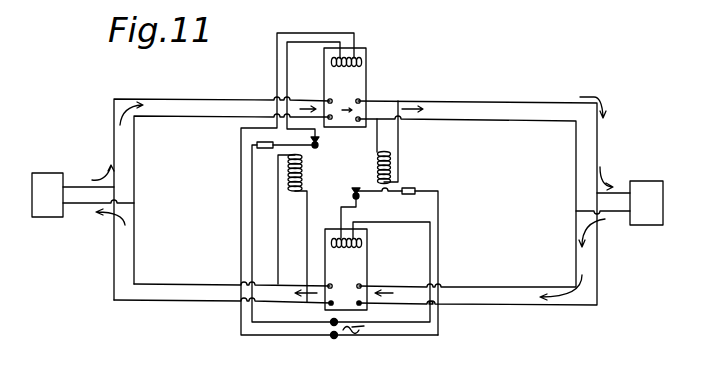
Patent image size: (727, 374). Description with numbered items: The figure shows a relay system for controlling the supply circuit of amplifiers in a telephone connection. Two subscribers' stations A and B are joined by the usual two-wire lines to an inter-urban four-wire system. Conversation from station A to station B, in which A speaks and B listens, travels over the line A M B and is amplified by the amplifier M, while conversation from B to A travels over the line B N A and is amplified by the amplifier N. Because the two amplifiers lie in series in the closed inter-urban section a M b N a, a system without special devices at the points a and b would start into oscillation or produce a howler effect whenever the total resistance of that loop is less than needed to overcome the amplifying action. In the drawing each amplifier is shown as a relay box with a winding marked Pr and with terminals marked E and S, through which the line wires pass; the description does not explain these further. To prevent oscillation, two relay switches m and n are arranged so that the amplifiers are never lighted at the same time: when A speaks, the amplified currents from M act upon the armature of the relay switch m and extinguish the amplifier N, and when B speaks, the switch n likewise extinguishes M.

The subscriber's station A is at (83, 195).
The subscriber's station B is at (619, 203).
The inter-urban section point a is at (171, 189).
The inter-urban section point b is at (355, 200).
The amplifier M is at (345, 87).
The amplifier N is at (346, 270).
The primary winding of relay Pr is at (346, 70).
The terminal E of relay E is at (335, 112).
The terminal S of relay S is at (353, 107).
The relay switch m is at (389, 218).
The relay switch n is at (341, 229).